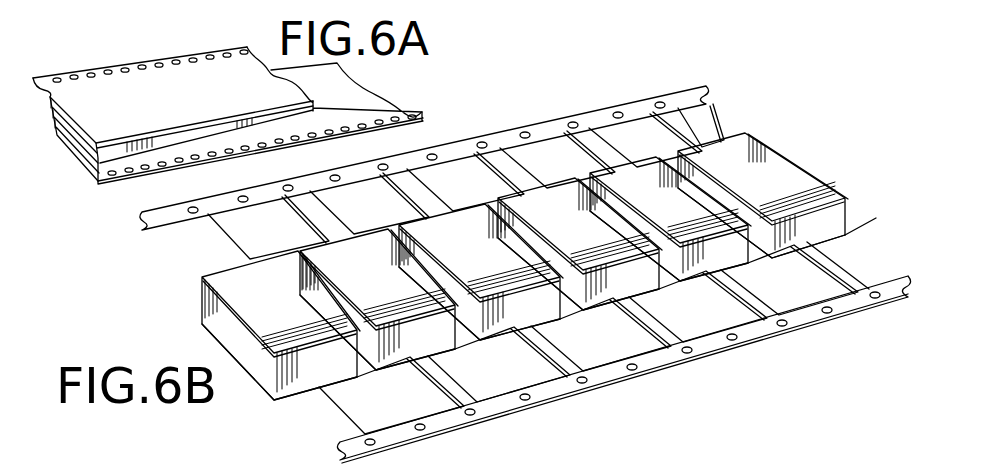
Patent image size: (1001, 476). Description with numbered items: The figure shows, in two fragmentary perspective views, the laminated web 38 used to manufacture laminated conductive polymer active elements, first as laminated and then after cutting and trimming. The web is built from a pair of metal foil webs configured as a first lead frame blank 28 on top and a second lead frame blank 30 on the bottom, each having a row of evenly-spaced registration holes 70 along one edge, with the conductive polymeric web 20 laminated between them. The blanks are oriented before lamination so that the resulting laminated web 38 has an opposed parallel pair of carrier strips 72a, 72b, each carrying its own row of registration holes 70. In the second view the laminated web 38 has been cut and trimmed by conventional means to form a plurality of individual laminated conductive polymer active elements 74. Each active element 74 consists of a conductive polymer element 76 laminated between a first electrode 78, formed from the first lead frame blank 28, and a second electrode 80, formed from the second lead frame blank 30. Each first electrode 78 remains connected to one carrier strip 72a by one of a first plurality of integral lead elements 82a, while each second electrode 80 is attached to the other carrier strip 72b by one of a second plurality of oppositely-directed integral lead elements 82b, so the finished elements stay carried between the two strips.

In FIG. 6A, the polymeric web 20 is at (66, 127).
In FIG. 6A, the first lead frame blank 28 is at (233, 77).
In FIG. 6A, the second lead frame blank 30 is at (365, 97).
In FIG. 6A, the laminated web 38 is at (76, 55).
In FIG. 6A, the registration holes 70 is at (125, 71).
In FIG. 6B, the registration holes 70 is at (525, 135).
In FIG. 6A, the carrier strip 72a is at (183, 52).
In FIG. 6B, the carrier strip 72a is at (323, 172).
In FIG. 6A, the carrier strip 72b is at (203, 158).
In FIG. 6B, the carrier strip 72b is at (557, 390).
In FIG. 6B, the laminated conductive polymer active element 74 is at (188, 285).
In FIG. 6B, the conductive polymer element 76 is at (218, 312).
In FIG. 6B, the first electrode 78 is at (280, 232).
In FIG. 6B, the second electrode 80 is at (503, 295).
In FIG. 6B, the integral lead element 82a is at (212, 235).
In FIG. 6B, the integral lead element 82b is at (355, 408).